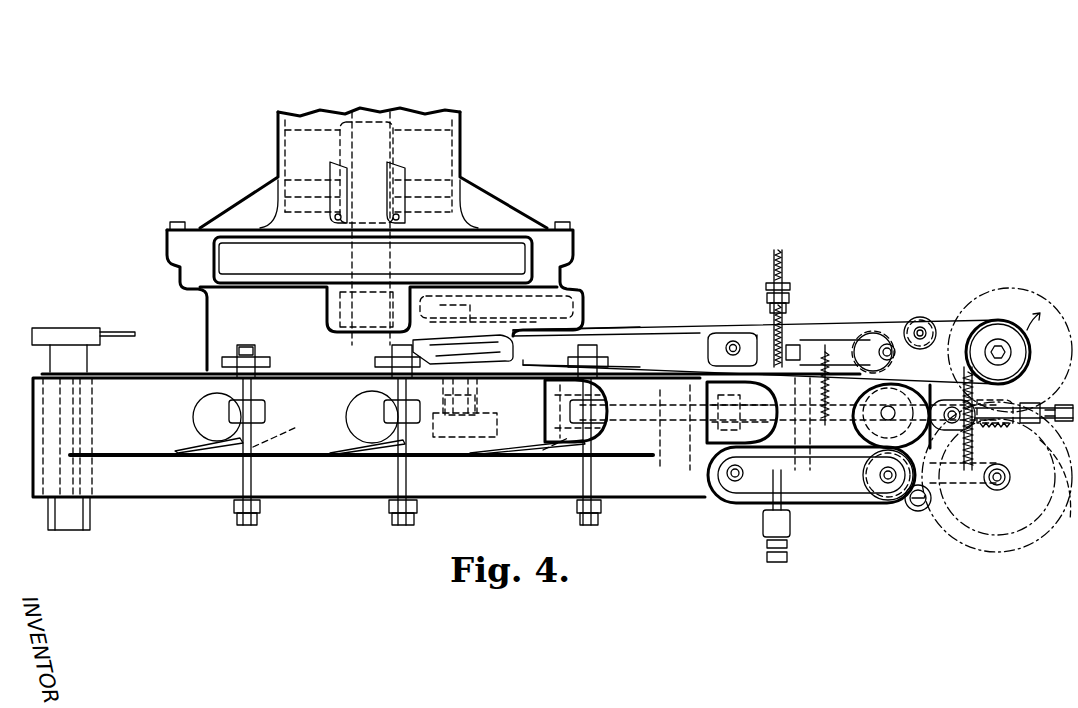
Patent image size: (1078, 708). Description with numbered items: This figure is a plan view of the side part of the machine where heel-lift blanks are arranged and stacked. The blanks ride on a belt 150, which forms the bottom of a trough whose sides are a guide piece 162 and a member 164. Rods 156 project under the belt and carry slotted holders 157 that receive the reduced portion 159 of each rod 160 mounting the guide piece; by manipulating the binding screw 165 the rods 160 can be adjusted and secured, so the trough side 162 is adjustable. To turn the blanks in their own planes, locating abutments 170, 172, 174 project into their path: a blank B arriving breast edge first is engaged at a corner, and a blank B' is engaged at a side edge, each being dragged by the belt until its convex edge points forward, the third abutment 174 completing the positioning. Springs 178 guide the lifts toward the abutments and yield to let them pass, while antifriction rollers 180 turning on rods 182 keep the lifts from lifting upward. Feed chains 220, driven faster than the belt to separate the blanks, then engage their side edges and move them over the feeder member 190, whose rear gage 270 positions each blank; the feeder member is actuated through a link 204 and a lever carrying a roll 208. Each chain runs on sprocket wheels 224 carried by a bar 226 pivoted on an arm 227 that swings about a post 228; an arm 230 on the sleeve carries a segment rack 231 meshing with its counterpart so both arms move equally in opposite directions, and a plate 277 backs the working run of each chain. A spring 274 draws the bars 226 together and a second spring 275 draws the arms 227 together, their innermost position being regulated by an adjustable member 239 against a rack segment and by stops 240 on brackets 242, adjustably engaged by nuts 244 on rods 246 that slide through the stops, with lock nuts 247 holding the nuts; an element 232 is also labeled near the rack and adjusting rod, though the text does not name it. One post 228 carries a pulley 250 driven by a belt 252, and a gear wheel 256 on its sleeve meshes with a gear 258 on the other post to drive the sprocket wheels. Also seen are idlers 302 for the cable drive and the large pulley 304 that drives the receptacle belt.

The belt 150 is at (340, 480).
The rods 156 is at (253, 447).
The holders 157 is at (238, 515).
The reduced portion 159 is at (403, 527).
The rod 160 is at (592, 475).
The guide piece 162 is at (505, 457).
The member 164 is at (147, 372).
The binding screw 165 is at (600, 512).
The projection or abutment 170 is at (246, 350).
The projection or abutment 172 is at (350, 355).
The third projection or locating abutment 174 is at (617, 358).
The springs 178 is at (203, 450).
The antifriction rollers 180 is at (230, 408).
The rods 182 is at (600, 395).
The feeder member 190 is at (797, 424).
The link 204 is at (680, 410).
The roll 208 is at (478, 437).
The feed chains 220 is at (820, 462).
The sprocket wheels 224 is at (738, 492).
The bar 226 is at (855, 350).
The arm 227 is at (985, 505).
The post 228 is at (1000, 345).
The arm 230 is at (1010, 478).
The segment rack 231 is at (1000, 448).
The rack 232 is at (1040, 395).
The adjustable member 239 is at (1075, 430).
The stops 240 is at (766, 300).
The brackets 242 is at (757, 318).
The nuts 244 is at (800, 300).
The rods 246 is at (782, 252).
The lock nuts 247 is at (770, 298).
The pulley 250 is at (995, 325).
The belt 252 is at (643, 328).
The gear wheel 256 is at (1038, 308).
The gear 258 is at (1005, 555).
The gage 270 is at (950, 425).
The spring 274 is at (815, 345).
The second spring 275 is at (1065, 430).
The plate 277 is at (835, 345).
The idlers 302 is at (358, 165).
The large pulley 304 is at (490, 252).
The blank B is at (202, 417).
The blank B' is at (357, 417).